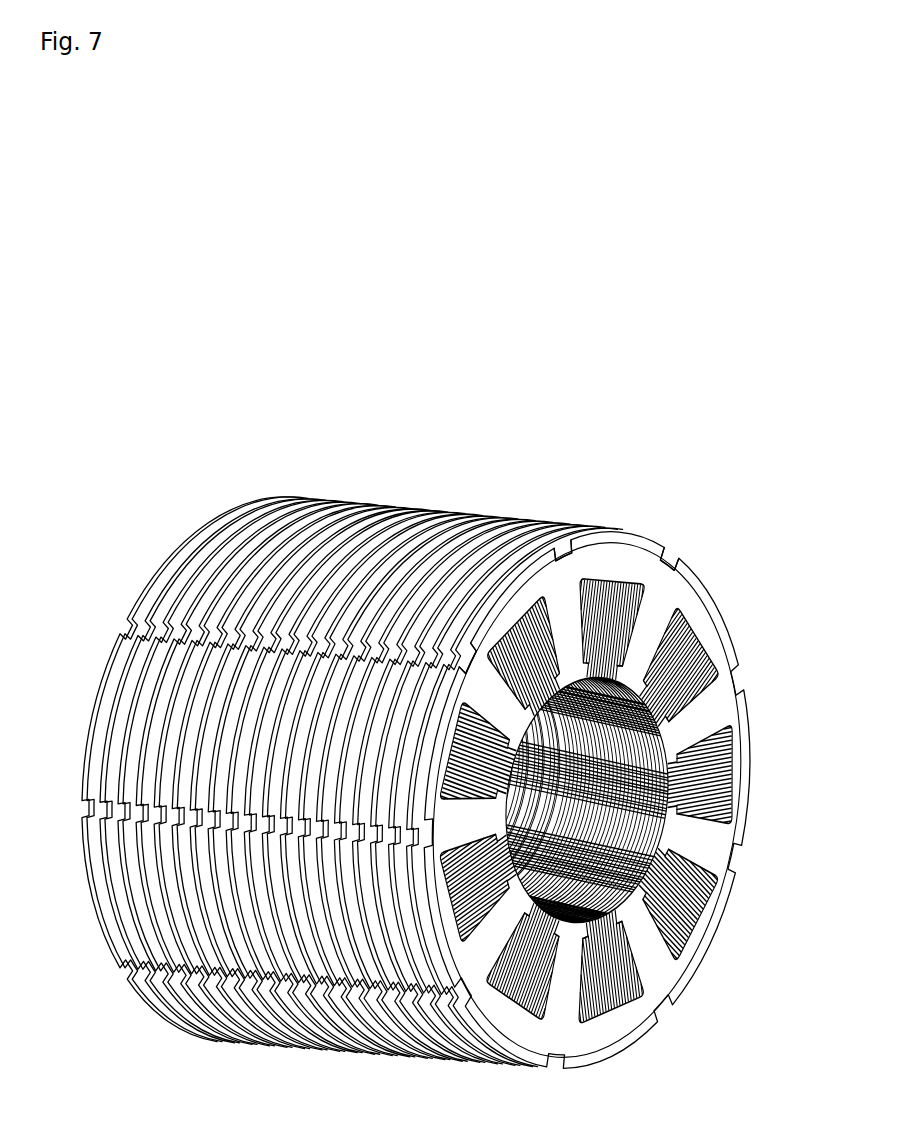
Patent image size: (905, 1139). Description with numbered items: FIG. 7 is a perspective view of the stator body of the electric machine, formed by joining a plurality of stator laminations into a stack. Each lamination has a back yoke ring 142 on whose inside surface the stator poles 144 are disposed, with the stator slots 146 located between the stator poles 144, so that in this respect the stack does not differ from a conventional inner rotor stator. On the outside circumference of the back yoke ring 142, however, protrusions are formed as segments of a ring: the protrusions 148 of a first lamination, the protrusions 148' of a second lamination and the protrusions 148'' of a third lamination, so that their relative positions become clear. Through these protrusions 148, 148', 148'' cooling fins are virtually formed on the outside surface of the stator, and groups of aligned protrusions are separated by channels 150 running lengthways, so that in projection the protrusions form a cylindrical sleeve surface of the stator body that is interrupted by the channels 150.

The back yoke ring 142 is at (730, 730).
The stator poles 144 is at (565, 652).
The stator slots 146 is at (593, 580).
The protrusions 148 is at (708, 427).
The protrusions of the second lamination 148' is at (579, 408).
The protrusions of the third lamination 148'' is at (436, 461).
The channels 150 is at (242, 503).